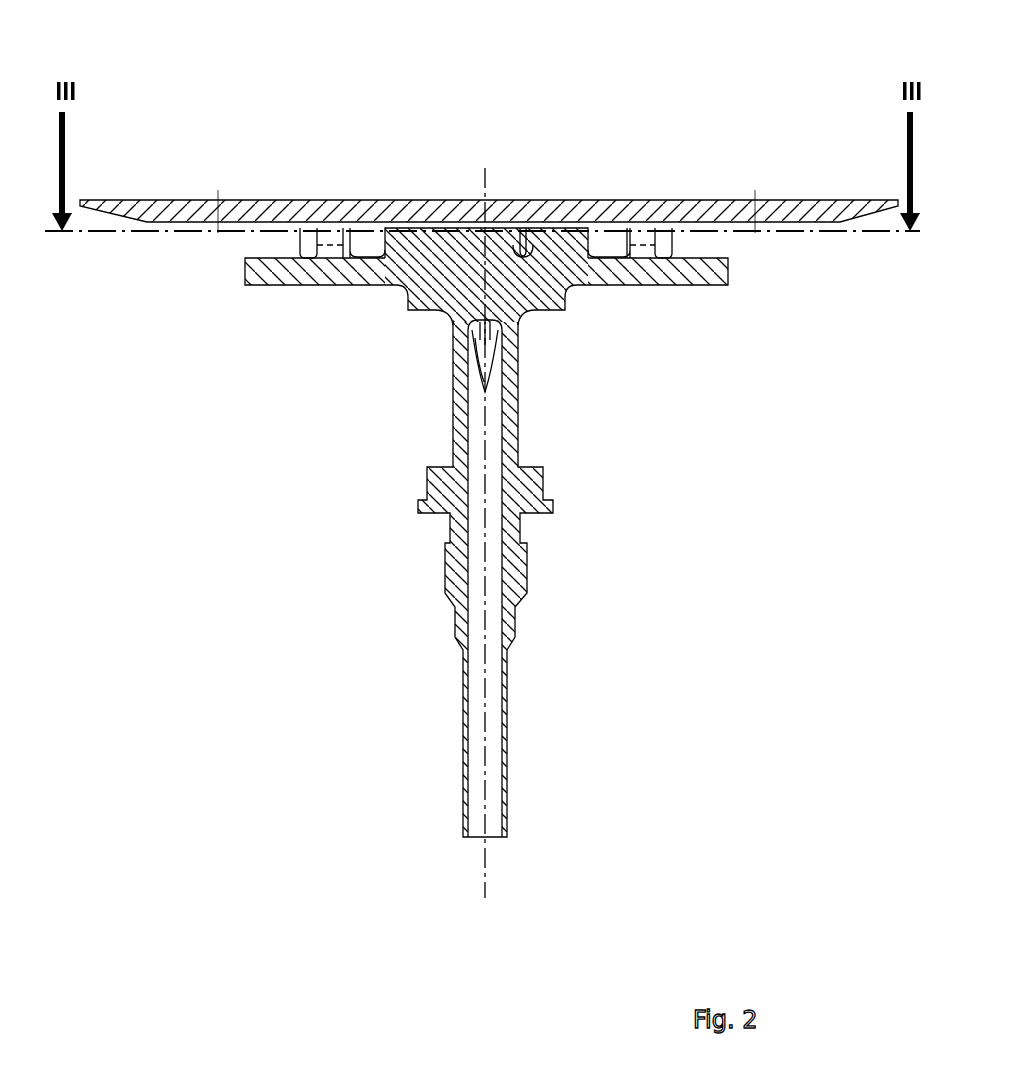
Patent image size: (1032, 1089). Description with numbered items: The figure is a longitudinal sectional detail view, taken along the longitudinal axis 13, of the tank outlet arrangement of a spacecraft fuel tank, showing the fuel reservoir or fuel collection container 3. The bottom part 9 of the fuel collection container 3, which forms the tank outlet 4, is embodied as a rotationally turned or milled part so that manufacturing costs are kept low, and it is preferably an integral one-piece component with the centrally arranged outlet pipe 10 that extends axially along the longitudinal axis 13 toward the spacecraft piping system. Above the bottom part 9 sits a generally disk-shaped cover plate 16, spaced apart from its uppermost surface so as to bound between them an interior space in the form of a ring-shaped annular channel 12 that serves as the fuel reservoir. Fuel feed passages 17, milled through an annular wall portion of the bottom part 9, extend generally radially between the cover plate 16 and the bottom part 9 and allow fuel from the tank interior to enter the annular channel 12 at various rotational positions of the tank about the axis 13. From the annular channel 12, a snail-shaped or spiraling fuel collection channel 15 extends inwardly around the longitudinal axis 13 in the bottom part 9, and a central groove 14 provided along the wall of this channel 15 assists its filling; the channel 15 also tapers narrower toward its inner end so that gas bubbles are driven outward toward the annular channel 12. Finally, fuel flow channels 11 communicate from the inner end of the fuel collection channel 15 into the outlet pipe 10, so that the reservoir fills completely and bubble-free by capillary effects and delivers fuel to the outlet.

The fuel collection container 3 is at (222, 294).
The tank outlet 4 is at (412, 334).
The bottom part 9 is at (558, 272).
The outlet pipe 10 is at (498, 530).
The fuel flow channels 11 is at (470, 330).
The annular channel 12 is at (357, 245).
The longitudinal axis 13 is at (485, 168).
The central groove 14 is at (524, 230).
The fuel collection channel 15 is at (470, 240).
The cover plate 16 is at (717, 213).
The fuel feed passages 17 is at (317, 247).